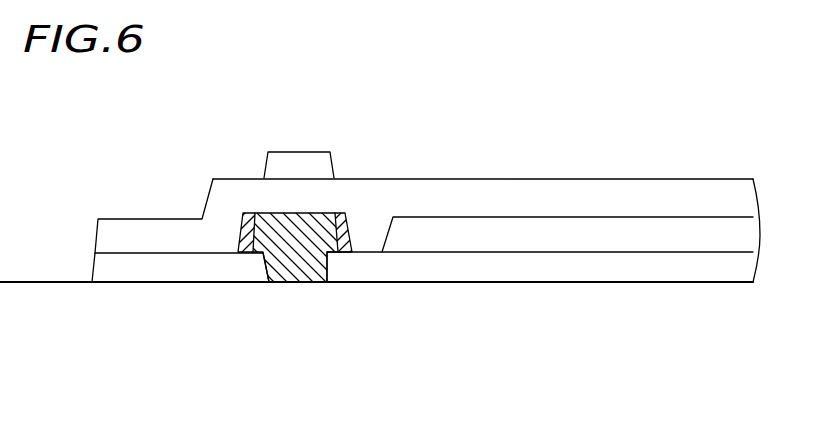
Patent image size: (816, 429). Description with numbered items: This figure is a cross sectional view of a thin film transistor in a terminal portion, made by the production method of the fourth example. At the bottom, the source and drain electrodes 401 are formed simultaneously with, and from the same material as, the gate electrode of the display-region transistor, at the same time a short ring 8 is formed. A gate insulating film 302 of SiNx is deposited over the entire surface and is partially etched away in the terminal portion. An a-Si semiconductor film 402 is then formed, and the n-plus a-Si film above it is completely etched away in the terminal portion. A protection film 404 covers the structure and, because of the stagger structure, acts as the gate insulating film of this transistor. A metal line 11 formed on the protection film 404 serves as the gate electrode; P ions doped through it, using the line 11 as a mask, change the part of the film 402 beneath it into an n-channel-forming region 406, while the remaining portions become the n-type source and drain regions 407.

The short ring 8 is at (122, 270).
The line 11 is at (310, 165).
The gate insulating film 302 is at (552, 236).
The source and drain electrodes 401 is at (243, 267).
The a-Si semiconductor film 402 is at (350, 207).
The protection film 404 is at (485, 200).
The n-channel-forming region 406 is at (280, 222).
The source and drain regions 407 is at (242, 227).